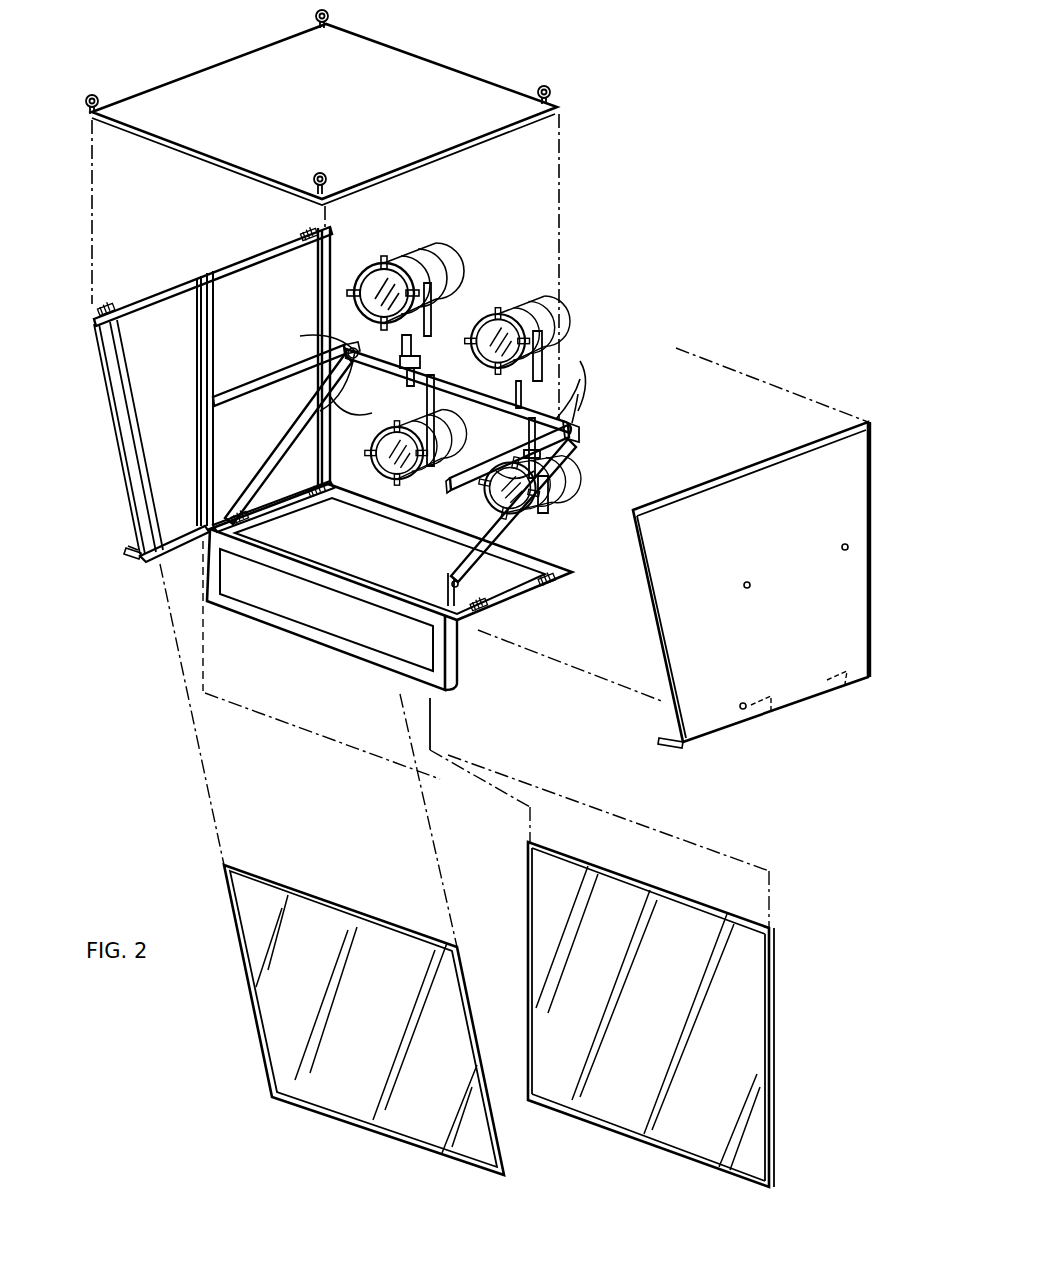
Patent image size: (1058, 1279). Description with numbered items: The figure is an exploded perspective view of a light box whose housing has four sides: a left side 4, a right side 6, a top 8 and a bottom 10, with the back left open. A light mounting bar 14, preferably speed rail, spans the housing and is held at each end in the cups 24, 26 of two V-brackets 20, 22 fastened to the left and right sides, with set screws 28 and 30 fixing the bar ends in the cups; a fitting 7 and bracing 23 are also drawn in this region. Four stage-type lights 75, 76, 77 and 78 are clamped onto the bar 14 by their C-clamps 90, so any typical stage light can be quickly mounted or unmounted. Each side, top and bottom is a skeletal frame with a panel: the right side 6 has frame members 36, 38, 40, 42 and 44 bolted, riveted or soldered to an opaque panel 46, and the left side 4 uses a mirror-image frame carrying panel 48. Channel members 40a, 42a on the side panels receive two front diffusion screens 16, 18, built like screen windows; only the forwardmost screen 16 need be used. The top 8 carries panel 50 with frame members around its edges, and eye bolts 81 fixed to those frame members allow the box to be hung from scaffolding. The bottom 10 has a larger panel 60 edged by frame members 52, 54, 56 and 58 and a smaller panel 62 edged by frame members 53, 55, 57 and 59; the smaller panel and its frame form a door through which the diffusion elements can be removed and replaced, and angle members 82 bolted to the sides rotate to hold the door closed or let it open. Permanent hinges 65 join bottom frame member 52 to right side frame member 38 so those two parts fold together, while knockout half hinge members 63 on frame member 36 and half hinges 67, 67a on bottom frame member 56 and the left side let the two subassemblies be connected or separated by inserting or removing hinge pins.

The left side 4 is at (857, 548).
The right side 6 is at (182, 262).
The junction fitting 7 is at (312, 344).
The top 8 is at (198, 60).
The bottom 10 is at (508, 600).
The bar 14 is at (432, 369).
The diffusion screen 16 is at (362, 1133).
The diffusion screen 18 is at (630, 1142).
The V-bracket 20 is at (568, 447).
The V-bracket 22 is at (264, 359).
The diagonal brace / fastener hole 23 is at (222, 395).
The cup 24 is at (571, 412).
The cup 26 is at (347, 348).
The set screw 28 is at (342, 345).
The set screw 30 is at (569, 385).
The frame member 36 is at (195, 268).
The frame member 38 is at (172, 529).
The frame member 40 is at (112, 449).
The channel member 40a is at (128, 391).
The frame member 42 is at (208, 293).
The channel member 42a is at (190, 392).
The frame member 44 is at (310, 262).
The opaque panel 46 is at (172, 356).
The panel 48 is at (785, 636).
The panel 50 is at (314, 107).
The frame member 52 is at (277, 509).
The frame member 53 is at (214, 585).
The frame member 54 is at (362, 505).
The frame member 55 is at (240, 555).
The frame member 56 is at (512, 569).
The frame member 57 is at (428, 640).
The frame member 58 is at (320, 555).
The frame member 59 is at (282, 623).
The large panel 60 is at (412, 557).
The smaller panel 62 is at (376, 625).
The half hinge member 63 is at (100, 294).
The hinge 65 is at (308, 481).
The half hinge 67 is at (542, 580).
The half hinge 67a is at (825, 688).
The stage-type light 75 is at (452, 261).
The stage-type light 76 is at (512, 285).
The stage-type light 77 is at (442, 431).
The stage-type light 78 is at (556, 508).
The eye bolt 81 is at (321, 6).
The angle member 82 is at (124, 549).
The C-clamp 90 is at (384, 391).